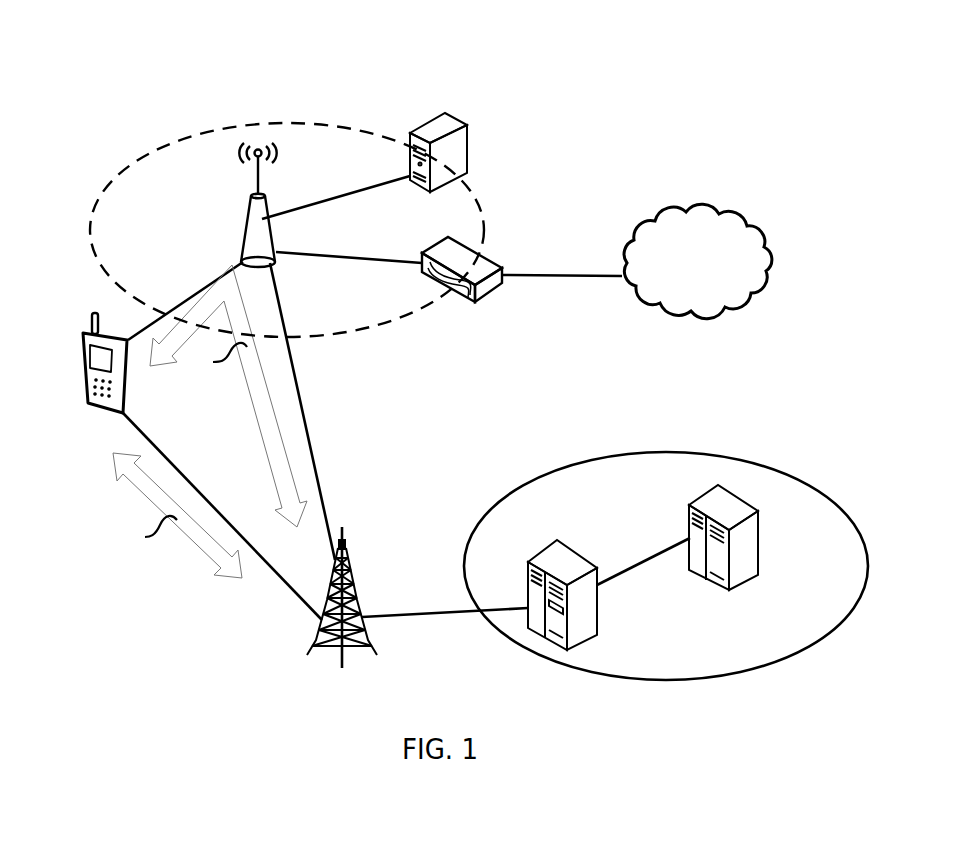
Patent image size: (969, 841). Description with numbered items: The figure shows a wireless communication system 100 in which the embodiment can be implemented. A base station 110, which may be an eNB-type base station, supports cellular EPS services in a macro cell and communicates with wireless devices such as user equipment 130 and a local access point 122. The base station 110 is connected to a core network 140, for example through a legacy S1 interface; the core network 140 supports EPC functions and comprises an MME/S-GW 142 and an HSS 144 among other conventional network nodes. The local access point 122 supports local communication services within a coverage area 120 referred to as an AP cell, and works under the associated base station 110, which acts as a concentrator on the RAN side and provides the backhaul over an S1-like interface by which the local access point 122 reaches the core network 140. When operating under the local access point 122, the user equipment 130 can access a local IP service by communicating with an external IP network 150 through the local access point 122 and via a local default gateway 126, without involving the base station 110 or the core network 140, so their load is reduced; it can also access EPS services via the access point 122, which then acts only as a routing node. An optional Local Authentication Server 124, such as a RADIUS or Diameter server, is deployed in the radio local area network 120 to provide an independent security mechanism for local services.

The wireless communication system 100 is at (127, 37).
The base station 110 is at (353, 587).
The coverage area 120 is at (290, 122).
The local access point 122 is at (267, 203).
The Local Authentication Server 124 is at (467, 130).
The local default gateway 126 is at (487, 253).
The user equipment 130 is at (80, 410).
The core network 140 is at (797, 477).
The MME/S-GW 142 is at (593, 637).
The HSS 144 is at (748, 577).
The external IP network 150 is at (765, 240).